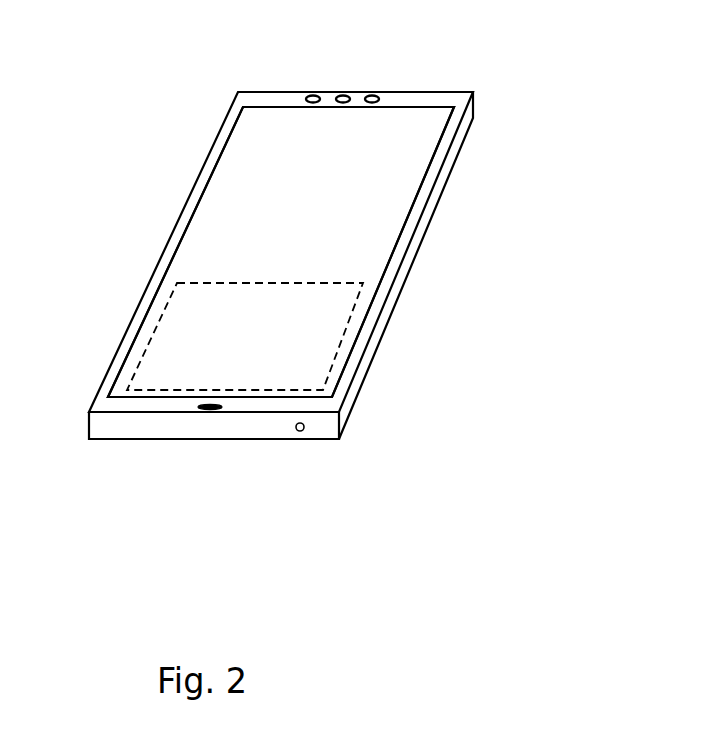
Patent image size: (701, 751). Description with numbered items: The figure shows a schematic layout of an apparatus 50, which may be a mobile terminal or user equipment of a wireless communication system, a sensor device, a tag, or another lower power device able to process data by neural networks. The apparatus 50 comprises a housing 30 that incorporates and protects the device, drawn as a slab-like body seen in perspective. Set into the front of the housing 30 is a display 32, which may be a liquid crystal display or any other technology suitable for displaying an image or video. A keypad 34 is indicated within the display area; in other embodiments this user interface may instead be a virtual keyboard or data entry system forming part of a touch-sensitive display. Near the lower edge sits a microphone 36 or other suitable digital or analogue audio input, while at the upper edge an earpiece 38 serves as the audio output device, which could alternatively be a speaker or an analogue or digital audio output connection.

The apparatus 50 is at (499, 58).
The housing 30 is at (252, 92).
The display 32 is at (392, 194).
The keypad 34 is at (328, 352).
The microphone 36 is at (213, 411).
The earpiece 38 is at (340, 95).